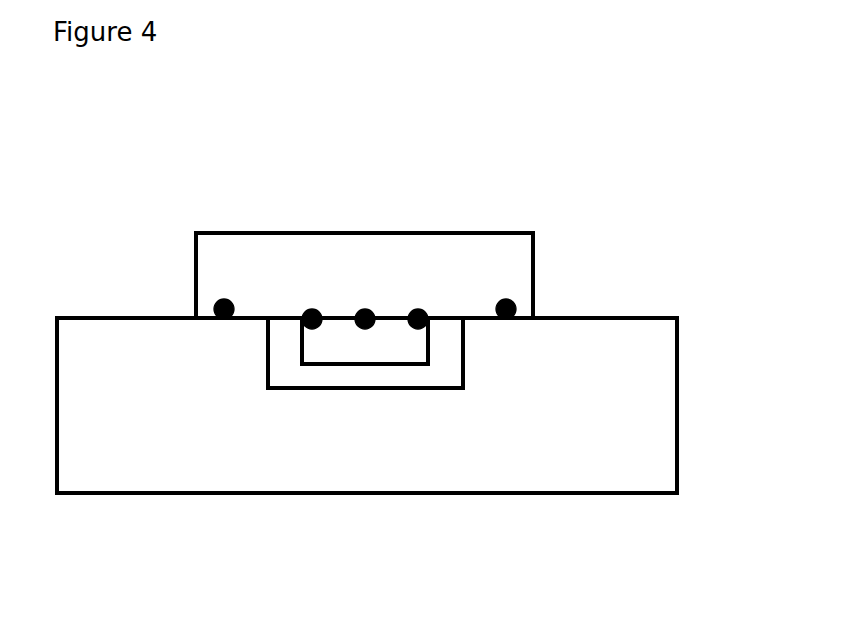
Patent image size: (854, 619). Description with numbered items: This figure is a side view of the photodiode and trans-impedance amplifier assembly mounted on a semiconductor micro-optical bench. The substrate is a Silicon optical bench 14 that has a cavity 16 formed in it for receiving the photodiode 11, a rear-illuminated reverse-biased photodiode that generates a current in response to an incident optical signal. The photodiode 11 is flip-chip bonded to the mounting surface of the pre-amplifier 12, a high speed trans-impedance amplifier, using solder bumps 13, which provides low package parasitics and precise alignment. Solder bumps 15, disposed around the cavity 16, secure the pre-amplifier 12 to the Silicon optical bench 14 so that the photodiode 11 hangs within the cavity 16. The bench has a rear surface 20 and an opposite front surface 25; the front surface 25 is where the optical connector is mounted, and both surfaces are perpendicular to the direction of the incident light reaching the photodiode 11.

The photodiode 11 is at (339, 353).
The pre-amplifier 12 is at (318, 232).
The solder bumps 13 is at (373, 317).
The Silicon optical bench 14 is at (678, 370).
The solder bumps 15 is at (214, 303).
The cavity 16 is at (443, 372).
The rear surface 20 is at (587, 317).
The front surface 25 is at (126, 495).